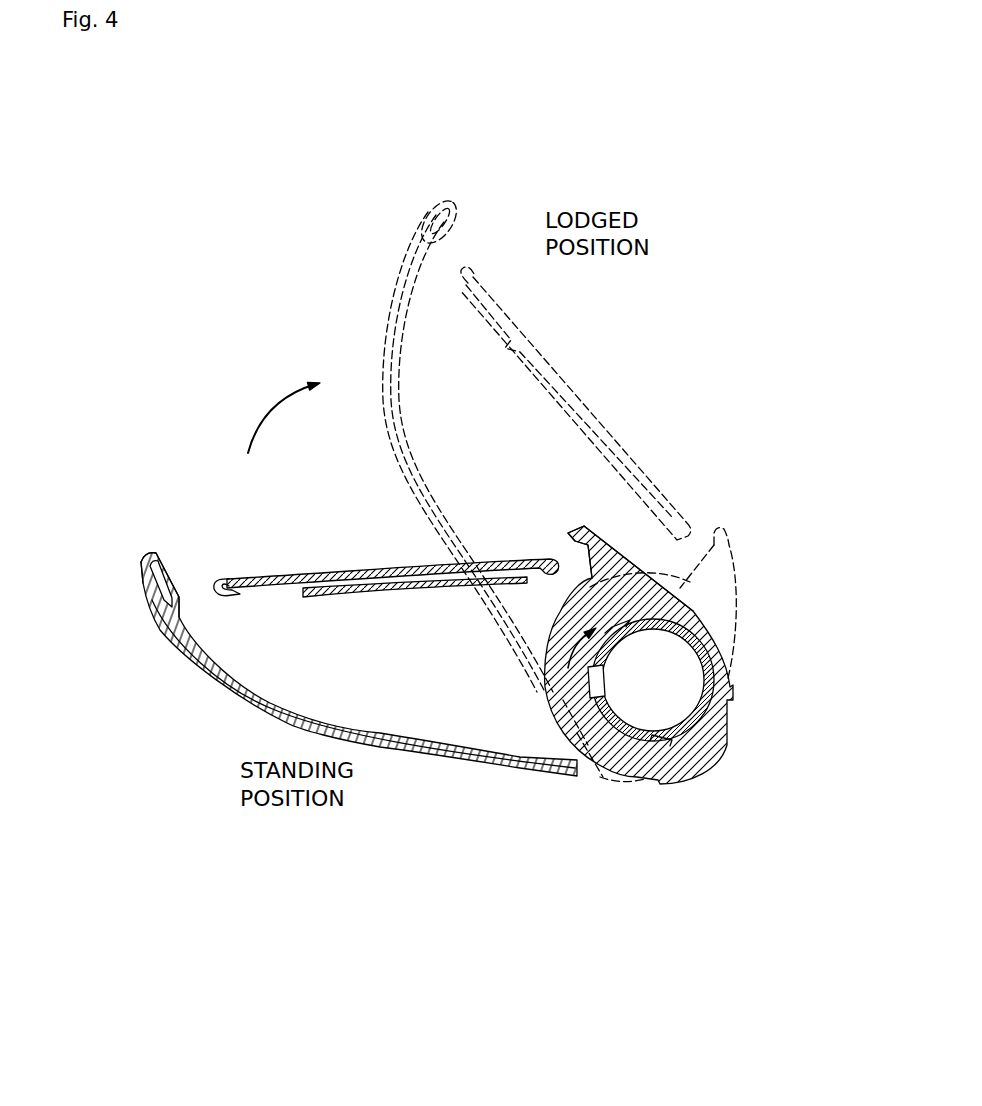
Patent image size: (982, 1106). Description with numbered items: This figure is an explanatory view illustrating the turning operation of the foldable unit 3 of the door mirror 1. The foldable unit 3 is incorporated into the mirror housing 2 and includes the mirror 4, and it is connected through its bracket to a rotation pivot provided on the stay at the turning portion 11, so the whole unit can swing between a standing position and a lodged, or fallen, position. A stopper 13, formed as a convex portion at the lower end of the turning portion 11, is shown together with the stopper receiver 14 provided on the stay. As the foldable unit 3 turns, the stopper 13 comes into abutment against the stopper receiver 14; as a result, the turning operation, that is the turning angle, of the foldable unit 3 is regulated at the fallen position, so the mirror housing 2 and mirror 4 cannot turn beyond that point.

The door mirror 1 is at (492, 780).
The mirror housing 2 is at (200, 673).
The foldable unit 3 is at (672, 593).
The mirror 4 is at (318, 578).
The turning portion 11 is at (722, 718).
The stopper (convex portion) 13 is at (592, 686).
The stopper receiver 14 is at (648, 628).